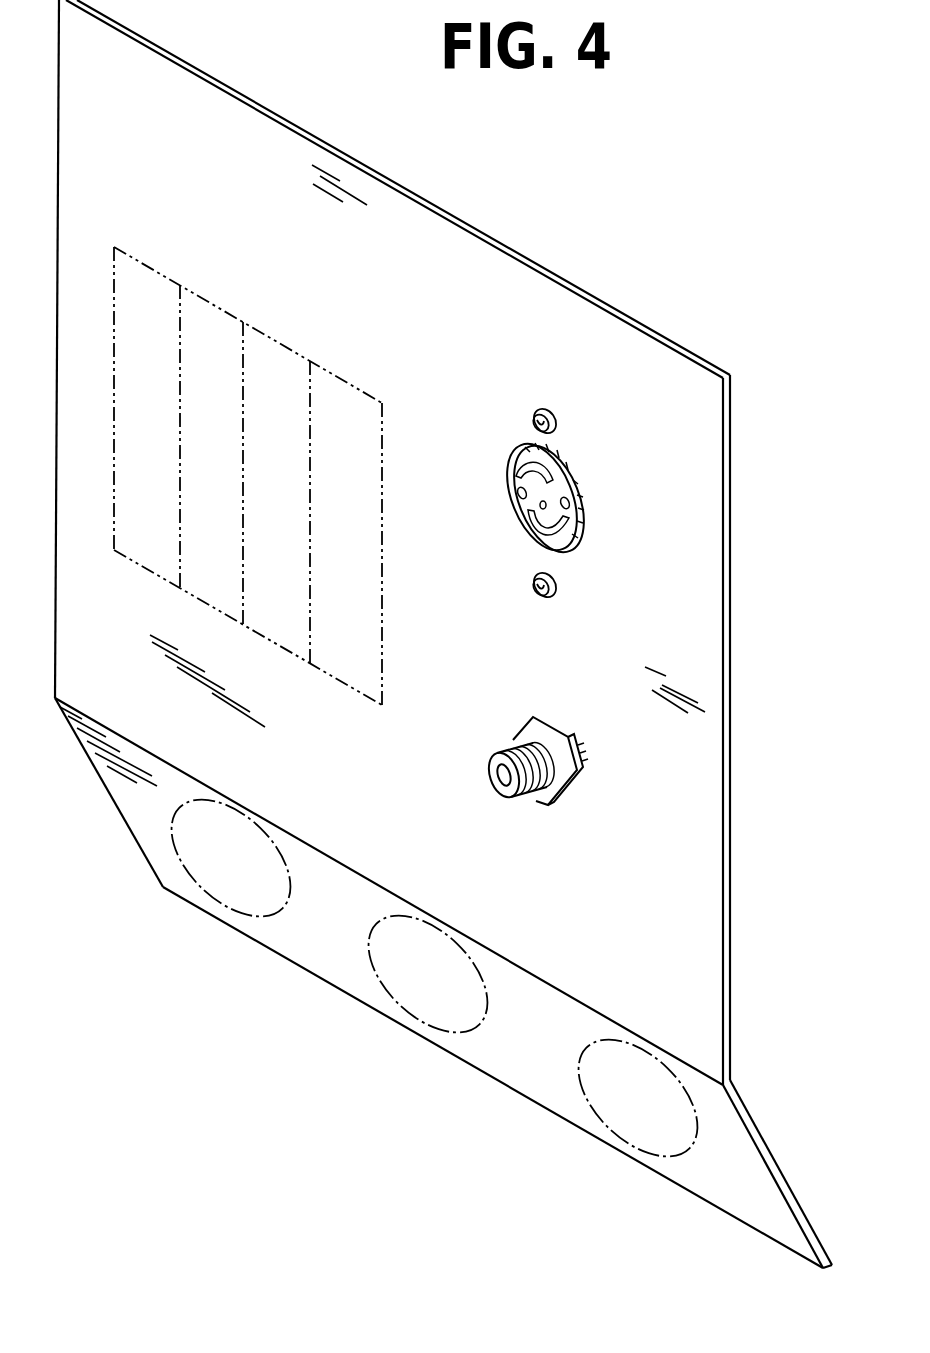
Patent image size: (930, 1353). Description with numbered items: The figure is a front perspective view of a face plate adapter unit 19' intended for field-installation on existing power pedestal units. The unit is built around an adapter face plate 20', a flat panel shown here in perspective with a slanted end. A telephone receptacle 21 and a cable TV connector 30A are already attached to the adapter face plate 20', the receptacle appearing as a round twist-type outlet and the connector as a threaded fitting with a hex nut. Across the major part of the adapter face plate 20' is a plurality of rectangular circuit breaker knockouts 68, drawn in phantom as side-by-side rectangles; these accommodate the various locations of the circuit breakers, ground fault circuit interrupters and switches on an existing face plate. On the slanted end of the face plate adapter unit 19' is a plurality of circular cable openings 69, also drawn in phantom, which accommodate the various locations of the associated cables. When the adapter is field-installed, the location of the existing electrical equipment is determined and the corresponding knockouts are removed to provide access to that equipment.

The face plate adapter unit 19' is at (453, 983).
The adapter face plate 20' is at (392, 542).
The telephone receptacle 21 is at (588, 497).
The cable TV connector 30A is at (532, 792).
The rectangular circuit breaker knockouts 68 is at (240, 326).
The circular cable openings 69 is at (372, 915).